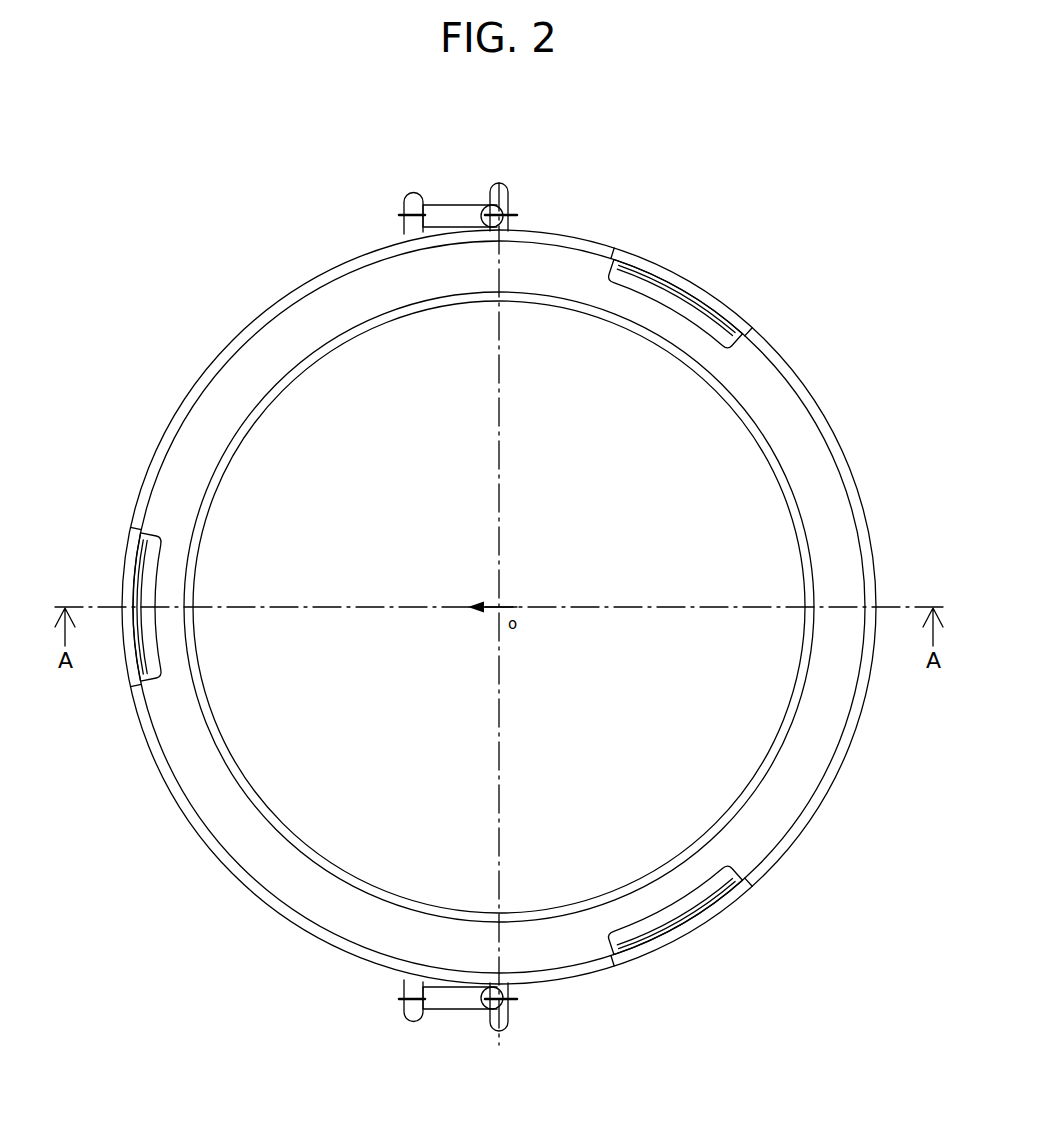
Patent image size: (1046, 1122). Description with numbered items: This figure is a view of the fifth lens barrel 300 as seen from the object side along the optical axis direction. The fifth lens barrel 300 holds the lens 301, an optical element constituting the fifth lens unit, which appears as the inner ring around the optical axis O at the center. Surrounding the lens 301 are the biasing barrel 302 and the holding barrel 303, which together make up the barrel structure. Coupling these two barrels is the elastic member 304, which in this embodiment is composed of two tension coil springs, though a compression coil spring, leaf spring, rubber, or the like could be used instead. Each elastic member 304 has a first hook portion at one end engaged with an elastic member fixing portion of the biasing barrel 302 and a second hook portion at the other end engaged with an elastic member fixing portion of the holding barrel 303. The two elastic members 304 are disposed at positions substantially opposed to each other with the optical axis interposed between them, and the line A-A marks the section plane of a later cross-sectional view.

The fifth lens barrel 300 is at (828, 268).
The lens 301 is at (270, 473).
The biasing barrel 302 is at (250, 363).
The holding barrel 303 is at (140, 545).
The elastic member 304 is at (452, 213).